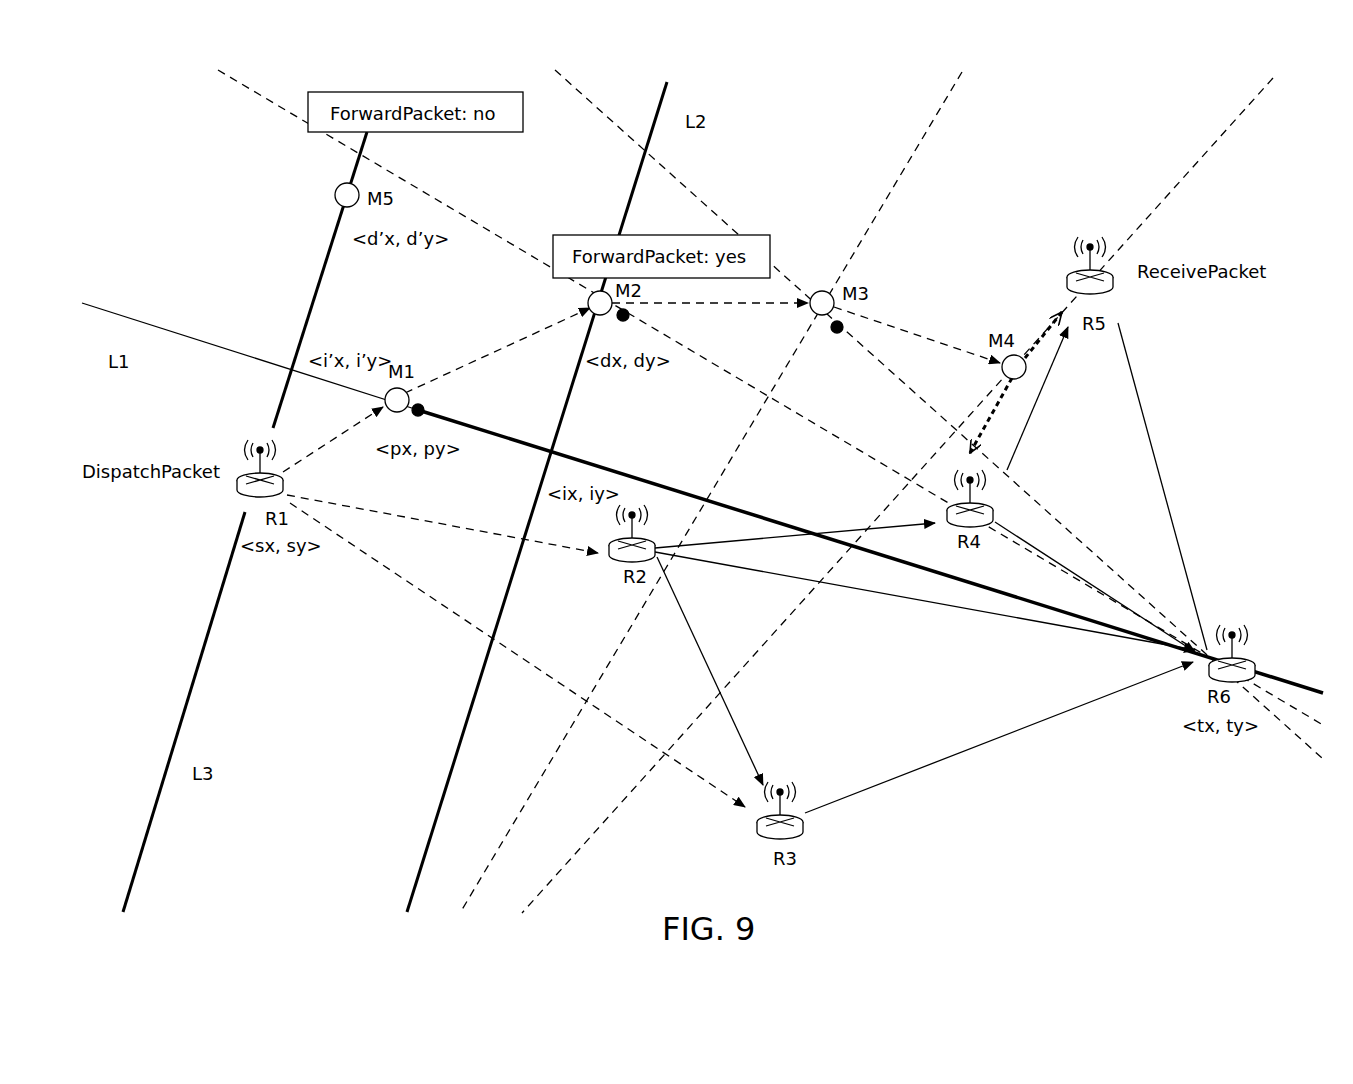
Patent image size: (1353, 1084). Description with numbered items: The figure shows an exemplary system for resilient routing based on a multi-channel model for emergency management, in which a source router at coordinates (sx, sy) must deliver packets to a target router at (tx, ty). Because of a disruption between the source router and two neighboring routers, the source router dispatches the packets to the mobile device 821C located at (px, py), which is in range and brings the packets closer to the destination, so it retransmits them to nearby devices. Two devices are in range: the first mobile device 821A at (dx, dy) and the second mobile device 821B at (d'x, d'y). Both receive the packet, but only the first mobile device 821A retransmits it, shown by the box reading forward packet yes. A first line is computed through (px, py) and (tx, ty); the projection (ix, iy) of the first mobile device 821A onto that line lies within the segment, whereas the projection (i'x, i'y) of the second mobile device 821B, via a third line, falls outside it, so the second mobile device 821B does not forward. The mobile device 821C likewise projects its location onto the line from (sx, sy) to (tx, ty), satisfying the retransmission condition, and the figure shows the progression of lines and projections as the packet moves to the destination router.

The first mobile device 821A is at (585, 297).
The second mobile device 821B is at (327, 193).
The mobile device 821C is at (413, 398).